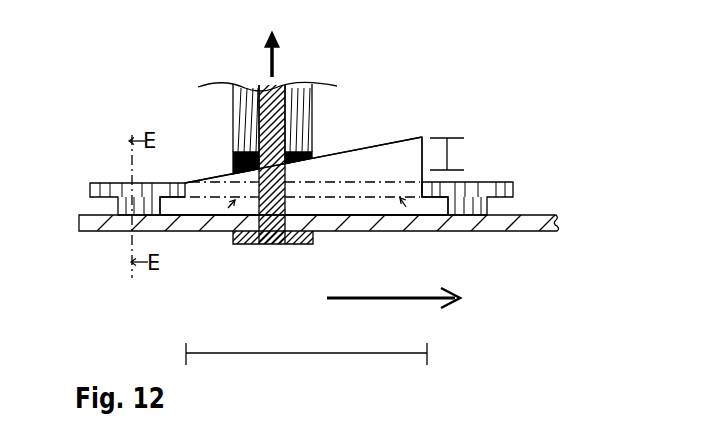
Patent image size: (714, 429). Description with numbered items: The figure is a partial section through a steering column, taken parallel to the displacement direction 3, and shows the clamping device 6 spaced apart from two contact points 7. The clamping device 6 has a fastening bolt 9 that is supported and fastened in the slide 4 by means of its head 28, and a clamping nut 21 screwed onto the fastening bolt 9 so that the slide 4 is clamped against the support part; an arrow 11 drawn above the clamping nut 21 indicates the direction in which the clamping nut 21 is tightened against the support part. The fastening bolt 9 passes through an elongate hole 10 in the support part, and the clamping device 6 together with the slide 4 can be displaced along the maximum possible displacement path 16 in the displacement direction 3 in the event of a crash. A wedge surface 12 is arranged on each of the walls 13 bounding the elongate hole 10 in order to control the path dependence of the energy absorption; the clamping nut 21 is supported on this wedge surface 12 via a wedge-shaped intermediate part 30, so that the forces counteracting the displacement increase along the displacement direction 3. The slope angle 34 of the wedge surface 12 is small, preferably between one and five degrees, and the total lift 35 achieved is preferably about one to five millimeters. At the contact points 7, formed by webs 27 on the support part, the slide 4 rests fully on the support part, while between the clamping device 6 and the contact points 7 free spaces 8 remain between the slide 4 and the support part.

The displacement direction 3 is at (428, 300).
The slide 4 is at (502, 223).
The clamping device 6 is at (273, 250).
The contact points 7 is at (125, 207).
The free spaces 8 is at (194, 280).
The fastening bolt 9 is at (279, 148).
The elongate hole 10 is at (377, 193).
The lifting direction arrow 11 is at (274, 63).
The wedge surface 12 is at (380, 155).
The wall 13 is at (410, 150).
The maximum possible displacement path 16 is at (258, 354).
The clamping nut 21 is at (312, 98).
The webs 27 is at (92, 272).
The head 28 is at (252, 238).
The wedge-shaped intermediate part 30 is at (233, 157).
The slope angle 34 is at (340, 158).
The total lift 35 is at (448, 160).